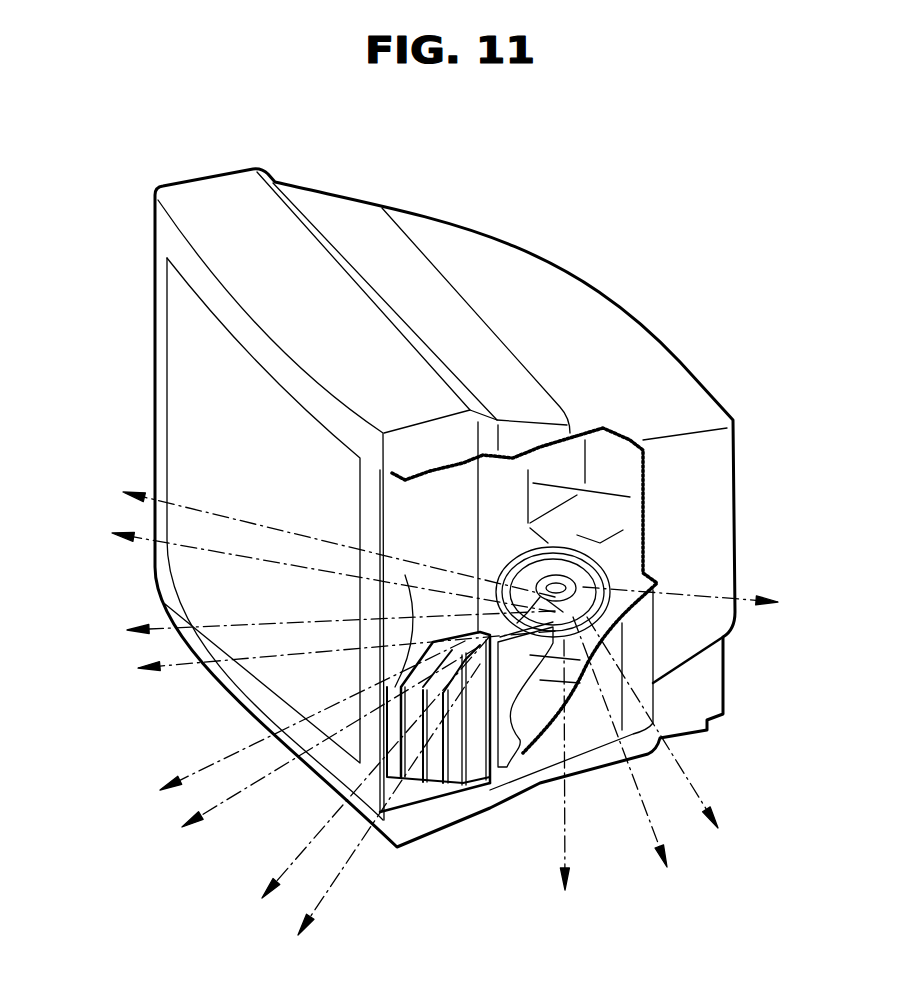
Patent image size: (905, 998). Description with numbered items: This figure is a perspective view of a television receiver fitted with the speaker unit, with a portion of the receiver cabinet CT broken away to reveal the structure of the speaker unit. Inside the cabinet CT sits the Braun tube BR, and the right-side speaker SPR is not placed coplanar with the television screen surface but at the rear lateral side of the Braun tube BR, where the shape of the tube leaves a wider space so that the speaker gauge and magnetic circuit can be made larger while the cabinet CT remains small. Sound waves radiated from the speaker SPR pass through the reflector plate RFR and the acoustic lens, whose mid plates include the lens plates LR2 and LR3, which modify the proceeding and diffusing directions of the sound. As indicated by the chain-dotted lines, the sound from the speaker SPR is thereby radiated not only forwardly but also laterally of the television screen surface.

The receiver cabinet CT is at (523, 257).
The Braun tube BR is at (183, 413).
The right-side speaker SPR is at (597, 569).
The reflector plate RFR is at (527, 773).
The lens plate LR3 is at (413, 765).
The lens plate LR2 is at (432, 765).